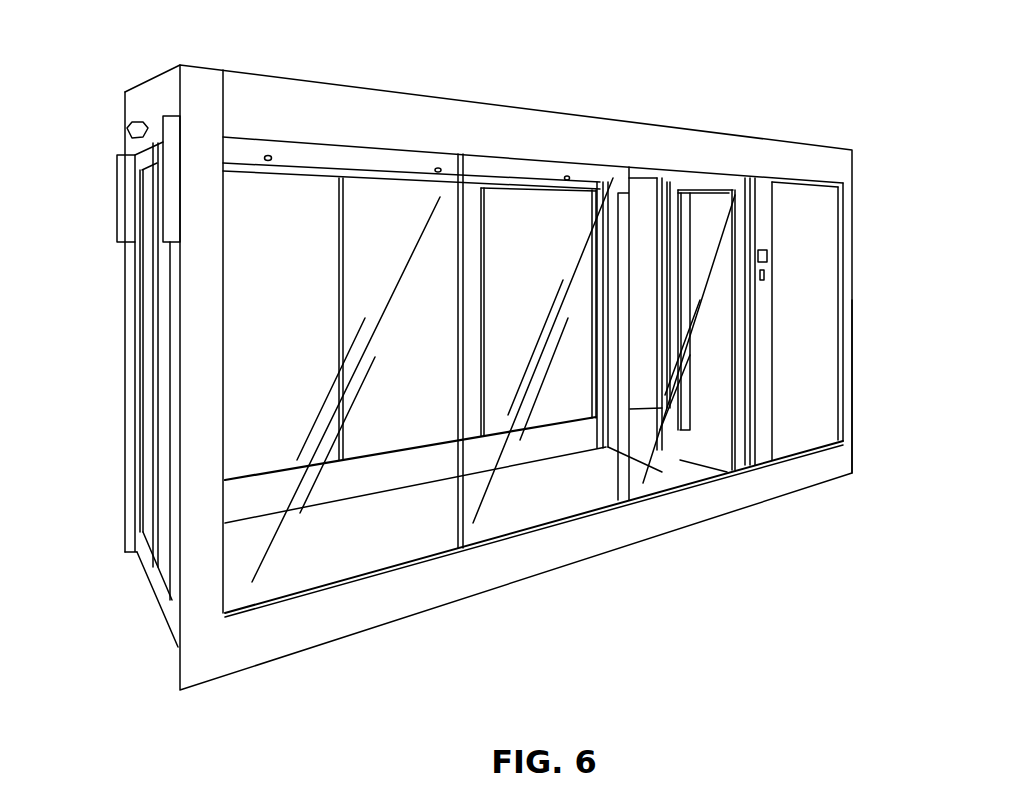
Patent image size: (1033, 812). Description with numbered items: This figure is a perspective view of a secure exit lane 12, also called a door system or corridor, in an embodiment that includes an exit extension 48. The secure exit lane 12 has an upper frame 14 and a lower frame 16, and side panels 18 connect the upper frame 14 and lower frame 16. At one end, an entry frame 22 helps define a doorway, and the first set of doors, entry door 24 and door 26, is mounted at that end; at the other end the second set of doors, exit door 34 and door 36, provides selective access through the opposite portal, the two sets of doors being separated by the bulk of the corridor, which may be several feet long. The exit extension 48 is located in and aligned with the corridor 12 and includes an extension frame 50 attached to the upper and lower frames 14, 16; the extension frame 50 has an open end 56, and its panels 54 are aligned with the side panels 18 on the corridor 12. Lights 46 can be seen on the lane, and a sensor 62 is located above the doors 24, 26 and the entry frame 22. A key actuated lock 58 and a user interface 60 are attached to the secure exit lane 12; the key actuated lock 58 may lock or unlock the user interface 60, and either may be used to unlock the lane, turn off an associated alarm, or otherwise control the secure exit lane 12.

The secure exit lane 12 is at (535, 92).
The upper frame 14 is at (300, 120).
The lower frame 16 is at (502, 562).
The side panels 18 is at (296, 570).
The entry frame 22 is at (190, 440).
The entry door 24 is at (147, 192).
The entry door 26 is at (170, 568).
The exit door 34 is at (645, 200).
The exit door 36 is at (713, 215).
The lights 46 is at (268, 155).
The exit extension 48 is at (802, 157).
The extension frame 50 is at (835, 168).
The panels 54 is at (790, 433).
The open end 56 is at (865, 400).
The key actuated lock 58 is at (762, 280).
The user interface 60 is at (762, 245).
The sensor 62 is at (132, 127).